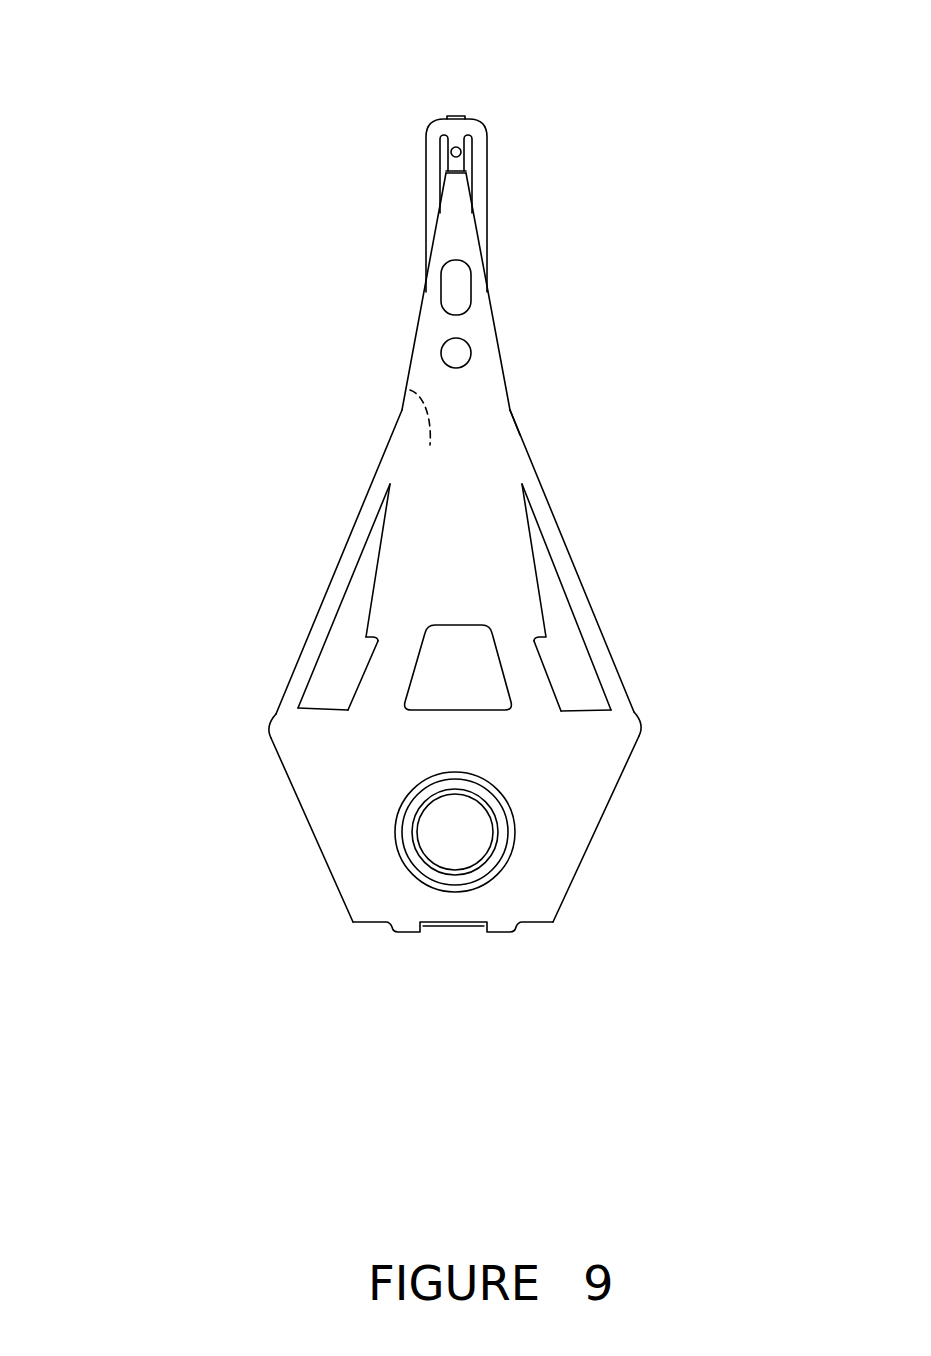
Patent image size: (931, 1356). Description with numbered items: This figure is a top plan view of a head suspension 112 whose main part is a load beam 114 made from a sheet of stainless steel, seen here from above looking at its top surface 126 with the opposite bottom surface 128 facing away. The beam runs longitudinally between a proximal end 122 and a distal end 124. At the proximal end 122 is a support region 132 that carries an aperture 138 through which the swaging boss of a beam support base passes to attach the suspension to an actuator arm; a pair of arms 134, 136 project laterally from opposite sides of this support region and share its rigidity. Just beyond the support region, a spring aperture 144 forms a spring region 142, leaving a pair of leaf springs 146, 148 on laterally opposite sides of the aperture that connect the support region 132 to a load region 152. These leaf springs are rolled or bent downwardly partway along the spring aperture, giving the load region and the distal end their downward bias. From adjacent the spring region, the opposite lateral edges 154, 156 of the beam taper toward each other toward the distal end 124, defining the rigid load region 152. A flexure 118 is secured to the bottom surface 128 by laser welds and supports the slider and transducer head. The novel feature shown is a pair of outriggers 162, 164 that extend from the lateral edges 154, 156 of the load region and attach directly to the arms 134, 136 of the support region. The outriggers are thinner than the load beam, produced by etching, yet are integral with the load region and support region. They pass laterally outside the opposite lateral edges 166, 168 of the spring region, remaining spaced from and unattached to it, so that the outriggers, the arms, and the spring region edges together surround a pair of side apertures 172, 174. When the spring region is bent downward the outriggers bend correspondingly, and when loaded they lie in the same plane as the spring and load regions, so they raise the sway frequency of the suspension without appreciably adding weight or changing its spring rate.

The head suspension 112 is at (645, 543).
The load beam 114 is at (460, 560).
The flexure 118 is at (478, 193).
The proximal end 122 is at (450, 945).
The distal end 124 is at (453, 103).
The top surface 126 is at (457, 488).
The bottom surface 128 is at (408, 388).
The support region 132 is at (565, 837).
The arm 134 is at (637, 725).
The arm 136 is at (287, 723).
The aperture 138 is at (405, 865).
The spring region 142 is at (352, 688).
The spring aperture 144 is at (442, 697).
The leaf spring 146 is at (535, 707).
The leaf spring 148 is at (380, 688).
The load region 152 is at (423, 495).
The lateral edge 154 is at (502, 383).
The lateral edge 156 is at (420, 313).
The outrigger 162 is at (583, 598).
The outrigger 164 is at (348, 545).
The lateral edge of the spring region 166 is at (548, 678).
The lateral edge of the spring region 168 is at (365, 672).
The side aperture 172 is at (562, 643).
The side aperture 174 is at (358, 598).